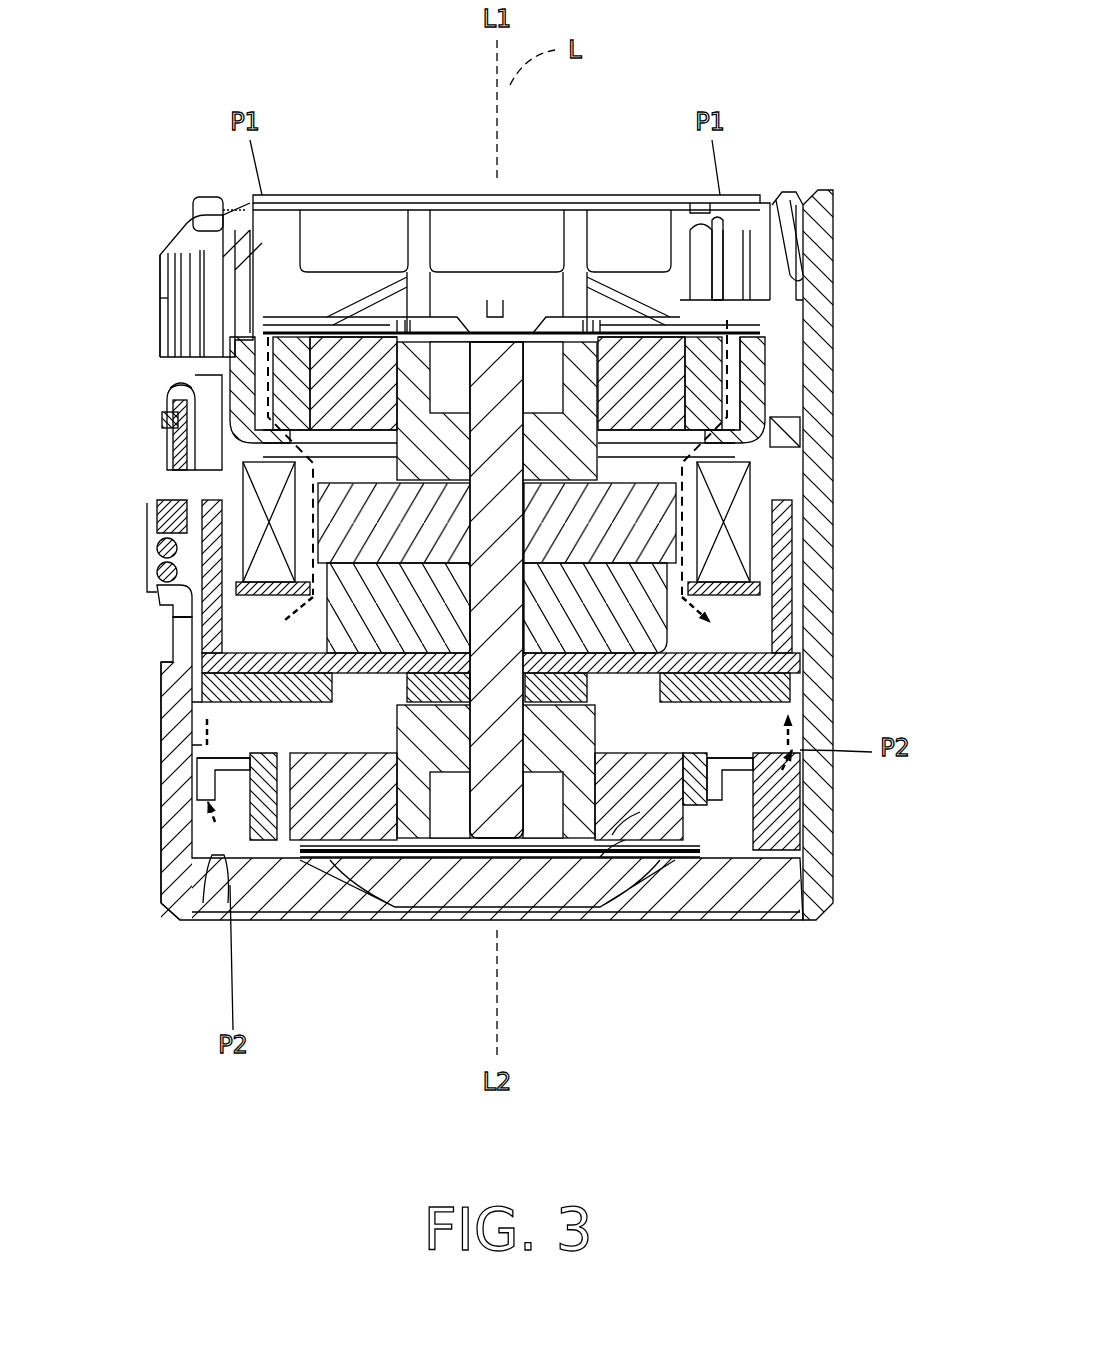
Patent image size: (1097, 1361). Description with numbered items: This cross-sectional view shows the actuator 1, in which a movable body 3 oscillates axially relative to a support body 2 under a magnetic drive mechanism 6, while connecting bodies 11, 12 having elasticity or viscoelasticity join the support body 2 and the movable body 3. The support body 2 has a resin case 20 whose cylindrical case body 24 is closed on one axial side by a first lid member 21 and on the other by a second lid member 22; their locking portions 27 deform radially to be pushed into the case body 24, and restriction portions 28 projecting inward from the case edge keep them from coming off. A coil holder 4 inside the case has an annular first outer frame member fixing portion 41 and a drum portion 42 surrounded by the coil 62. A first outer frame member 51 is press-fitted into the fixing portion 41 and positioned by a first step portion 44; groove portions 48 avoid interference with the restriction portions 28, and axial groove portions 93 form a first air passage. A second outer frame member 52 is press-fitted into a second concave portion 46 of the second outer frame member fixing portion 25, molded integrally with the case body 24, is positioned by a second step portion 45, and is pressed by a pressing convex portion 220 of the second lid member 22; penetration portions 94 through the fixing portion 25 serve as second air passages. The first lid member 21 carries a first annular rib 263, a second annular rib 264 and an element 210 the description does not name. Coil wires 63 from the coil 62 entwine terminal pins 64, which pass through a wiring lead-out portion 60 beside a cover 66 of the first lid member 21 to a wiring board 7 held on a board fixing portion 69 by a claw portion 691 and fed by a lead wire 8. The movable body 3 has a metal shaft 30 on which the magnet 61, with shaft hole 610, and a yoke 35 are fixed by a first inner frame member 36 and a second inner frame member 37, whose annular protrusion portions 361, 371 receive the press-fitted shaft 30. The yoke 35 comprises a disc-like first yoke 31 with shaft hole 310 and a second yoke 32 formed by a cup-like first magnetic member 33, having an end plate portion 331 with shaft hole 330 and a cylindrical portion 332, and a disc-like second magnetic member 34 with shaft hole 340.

The actuator 1 is at (118, 83).
The support body 2 is at (852, 308).
The movable body 3 is at (200, 666).
The coil holder 4 is at (215, 311).
The magnetic drive mechanism 6 is at (888, 572).
The wiring board 7 is at (175, 437).
The lead wire 8 is at (160, 572).
The upper bearing holder 11 is at (357, 335).
The lower bearing holder 12 is at (348, 850).
The case 20 is at (158, 825).
The first lid member 21 is at (230, 190).
The second lid member 22 is at (394, 925).
The case body 24 is at (170, 832).
The second outer frame member fixing portion 25 is at (190, 712).
The locking portion 27 is at (180, 866).
The restriction portion 28 is at (785, 195).
The shaft 30 is at (526, 342).
The first yoke 31 is at (660, 532).
The second yoke 32 is at (904, 645).
The first magnetic member 33 is at (785, 640).
The second magnetic member 34 is at (737, 686).
The yoke 35 is at (942, 545).
The first inner frame member 36 is at (415, 342).
The second inner frame member 37 is at (452, 745).
The first outer frame member fixing portion 41 is at (200, 262).
The drum portion 42 is at (165, 592).
The first step portion 44 is at (730, 386).
The second step portion 45 is at (215, 778).
The second concave portion 46 is at (705, 812).
The groove portion 48 is at (792, 440).
The first outer frame member 51 is at (295, 337).
The second outer frame member 52 is at (298, 845).
The wiring lead-out portion 60 is at (163, 392).
The magnet 61 is at (660, 602).
The coil 62 is at (715, 552).
The coil wire 63 is at (196, 378).
The terminal pin 64 is at (165, 420).
The cover 66 is at (167, 297).
The board fixing portion 69 is at (185, 540).
The groove portion 93 is at (266, 342).
The penetration portion 94 is at (200, 770).
The thin plate 210 is at (578, 333).
The pressing convex portion 220 is at (612, 835).
The first annular rib 263 is at (612, 250).
The second annular rib 264 is at (675, 195).
The shaft hole 310 is at (526, 494).
The shaft hole 330 is at (473, 655).
The end plate portion 331 is at (175, 655).
The cylindrical portion 332 is at (180, 618).
The shaft hole 340 is at (473, 690).
The annular protrusion portion 361 is at (451, 317).
The annular protrusion portion 371 is at (466, 857).
The shaft hole 610 is at (526, 576).
The claw portion 691 is at (178, 400).